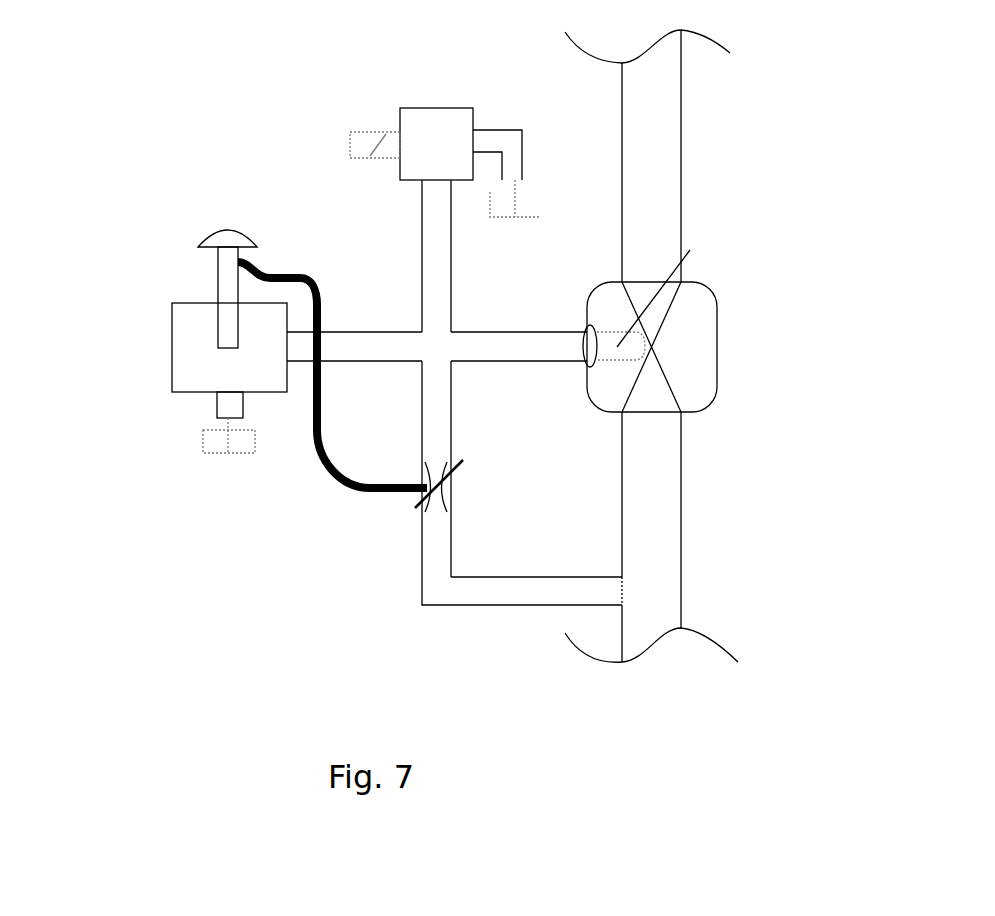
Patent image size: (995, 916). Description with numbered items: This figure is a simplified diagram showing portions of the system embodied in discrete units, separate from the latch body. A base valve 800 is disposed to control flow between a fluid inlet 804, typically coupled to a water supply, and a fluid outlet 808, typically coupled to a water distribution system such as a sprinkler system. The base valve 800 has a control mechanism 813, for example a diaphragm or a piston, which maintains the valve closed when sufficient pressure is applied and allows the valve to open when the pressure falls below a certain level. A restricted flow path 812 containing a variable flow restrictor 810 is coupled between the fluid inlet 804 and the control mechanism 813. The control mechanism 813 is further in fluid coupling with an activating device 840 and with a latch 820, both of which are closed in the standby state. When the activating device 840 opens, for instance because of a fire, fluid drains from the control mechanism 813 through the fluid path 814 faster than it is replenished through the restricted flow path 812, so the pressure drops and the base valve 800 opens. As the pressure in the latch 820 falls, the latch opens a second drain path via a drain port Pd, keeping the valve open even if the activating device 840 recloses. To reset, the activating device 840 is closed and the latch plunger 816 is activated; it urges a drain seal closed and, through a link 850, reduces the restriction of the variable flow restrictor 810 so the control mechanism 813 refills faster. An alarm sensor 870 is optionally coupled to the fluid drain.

The base valve 800 is at (703, 303).
The fluid inlet 804 is at (660, 532).
The fluid outlet 808 is at (660, 145).
The variable flow restrictor 810 is at (450, 492).
The restricted flow path 812 is at (422, 538).
The control mechanism 813 is at (690, 250).
The fluid path 814 is at (387, 347).
The latch plunger 816 is at (217, 282).
The latch 820 is at (165, 362).
The activating device 840 is at (407, 118).
The link 850 is at (367, 488).
The alarm sensor 870 is at (210, 457).
The drain port Pd is at (217, 403).